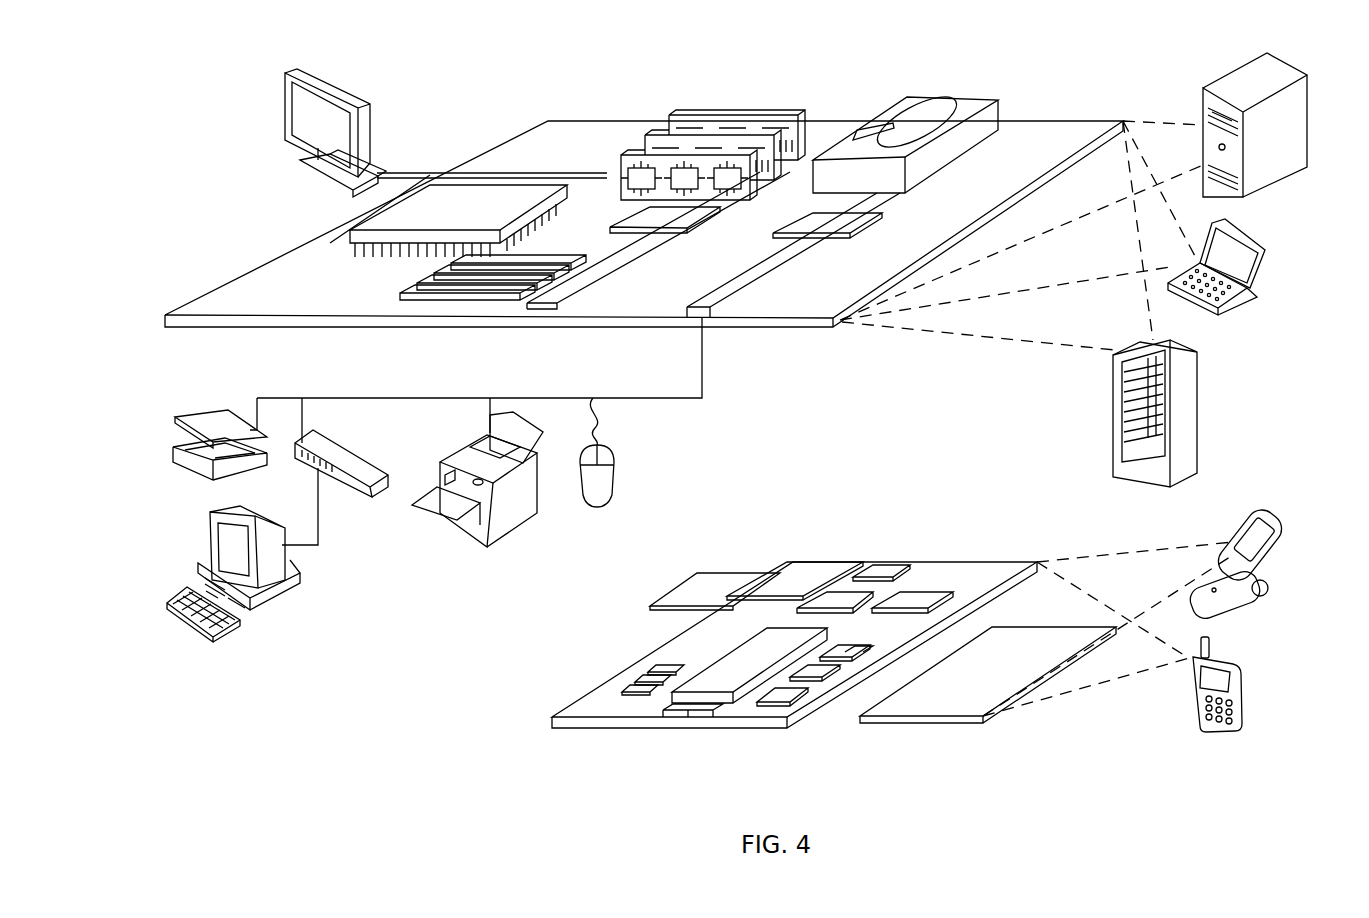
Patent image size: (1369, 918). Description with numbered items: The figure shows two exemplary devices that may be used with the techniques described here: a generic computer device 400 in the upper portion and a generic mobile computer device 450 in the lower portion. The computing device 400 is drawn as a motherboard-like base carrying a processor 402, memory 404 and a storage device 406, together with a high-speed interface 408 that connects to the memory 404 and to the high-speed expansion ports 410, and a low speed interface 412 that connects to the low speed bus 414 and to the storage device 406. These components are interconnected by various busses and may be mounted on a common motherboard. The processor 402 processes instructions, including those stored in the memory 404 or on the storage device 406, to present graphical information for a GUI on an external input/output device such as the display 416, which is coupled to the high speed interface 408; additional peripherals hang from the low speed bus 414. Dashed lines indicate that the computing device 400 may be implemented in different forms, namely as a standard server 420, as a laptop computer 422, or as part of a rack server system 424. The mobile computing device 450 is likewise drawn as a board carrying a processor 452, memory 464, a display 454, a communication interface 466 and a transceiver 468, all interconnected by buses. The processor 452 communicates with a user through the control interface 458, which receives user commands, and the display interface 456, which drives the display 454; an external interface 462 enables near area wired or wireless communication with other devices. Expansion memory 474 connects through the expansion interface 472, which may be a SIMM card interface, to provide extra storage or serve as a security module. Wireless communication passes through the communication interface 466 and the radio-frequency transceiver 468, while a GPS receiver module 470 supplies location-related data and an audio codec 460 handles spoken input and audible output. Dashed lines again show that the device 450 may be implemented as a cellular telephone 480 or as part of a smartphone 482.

The generic computer device 400 is at (466, 90).
The processor 402 is at (350, 235).
The memory 404 is at (669, 115).
The storage device 406 is at (900, 110).
The high-speed interface 408 is at (638, 220).
The high-speed expansion ports 410 is at (417, 286).
The low speed interface 412 is at (812, 226).
The low speed bus 414 is at (712, 318).
The display 416 is at (286, 73).
The standard server 420 is at (1203, 106).
The laptop computer 422 is at (1266, 252).
The rack server system 424 is at (1113, 436).
The generic mobile computer device 450 is at (530, 727).
The processor 452 is at (718, 694).
The display 454 is at (956, 708).
The display interface 456 is at (795, 704).
The control interface 458 is at (828, 680).
The audio codec 460 is at (848, 660).
The external interface 462 is at (688, 726).
The memory 464 is at (640, 686).
The communication interface 466 is at (838, 600).
The transceiver 468 is at (912, 600).
The GPS receiver module 470 is at (882, 572).
The expansion interface 472 is at (770, 576).
The expansion memory 474 is at (704, 576).
The cellular telephone 480 is at (1247, 518).
The smartphone 482 is at (1195, 697).